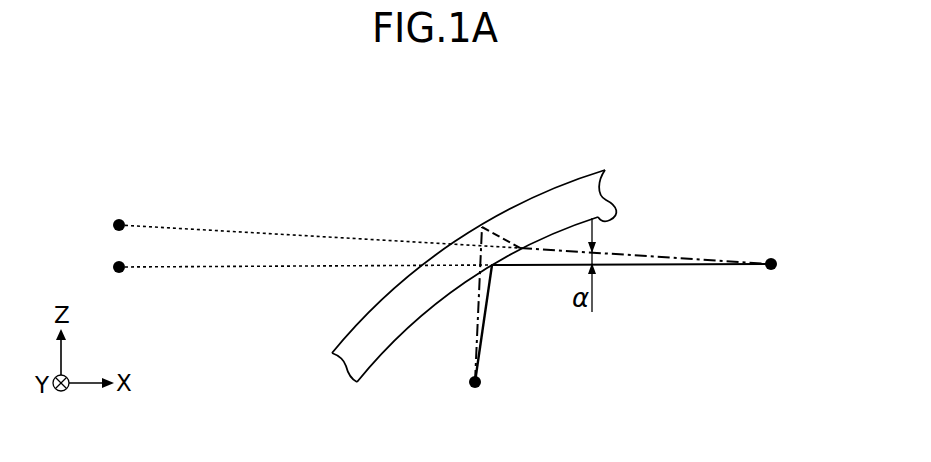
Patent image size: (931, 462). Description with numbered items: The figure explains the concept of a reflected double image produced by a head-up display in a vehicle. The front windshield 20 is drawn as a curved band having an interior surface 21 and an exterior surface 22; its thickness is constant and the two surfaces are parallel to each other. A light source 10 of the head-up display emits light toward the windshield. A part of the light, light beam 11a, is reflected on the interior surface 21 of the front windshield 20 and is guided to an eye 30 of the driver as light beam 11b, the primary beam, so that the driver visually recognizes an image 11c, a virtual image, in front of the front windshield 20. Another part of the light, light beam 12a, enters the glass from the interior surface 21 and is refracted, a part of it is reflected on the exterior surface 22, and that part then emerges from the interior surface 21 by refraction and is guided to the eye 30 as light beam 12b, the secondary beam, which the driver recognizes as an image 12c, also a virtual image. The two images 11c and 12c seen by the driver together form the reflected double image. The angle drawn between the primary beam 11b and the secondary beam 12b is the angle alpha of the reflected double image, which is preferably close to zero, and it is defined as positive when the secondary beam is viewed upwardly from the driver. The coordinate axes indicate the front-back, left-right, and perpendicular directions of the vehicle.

The light source 10 is at (470, 389).
The light beam 11a is at (486, 305).
The light beam (primary beam) 11b is at (622, 266).
The image (virtual image) 11c is at (114, 262).
The light beam 12a is at (479, 305).
The light beam (secondary beam) 12b is at (632, 249).
The image (virtual image) 12c is at (114, 220).
The front windshield 20 is at (506, 256).
The interior surface 21 is at (612, 217).
The exterior surface 22 is at (542, 189).
The eye 30 is at (774, 259).